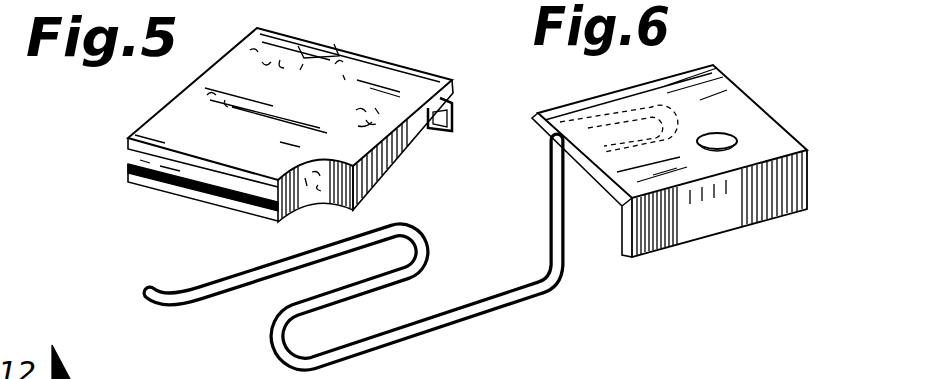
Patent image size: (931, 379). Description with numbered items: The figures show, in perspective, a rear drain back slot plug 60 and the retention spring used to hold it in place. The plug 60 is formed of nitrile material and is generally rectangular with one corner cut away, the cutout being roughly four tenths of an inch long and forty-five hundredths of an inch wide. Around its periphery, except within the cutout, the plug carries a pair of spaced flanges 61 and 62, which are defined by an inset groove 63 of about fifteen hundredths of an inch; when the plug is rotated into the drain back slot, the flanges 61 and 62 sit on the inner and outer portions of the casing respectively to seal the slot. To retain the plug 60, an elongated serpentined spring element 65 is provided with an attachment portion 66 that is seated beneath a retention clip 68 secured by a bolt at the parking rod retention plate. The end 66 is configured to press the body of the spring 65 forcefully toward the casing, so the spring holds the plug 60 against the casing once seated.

In FIG. 5, the rear drain back slot plug 60 is at (147, 195).
In FIG. 5, the flange 61 is at (128, 142).
In FIG. 5, the flange 62 is at (128, 176).
In FIG. 5, the inset groove 63 is at (228, 190).
In FIG. 5, the serpentined spring element 65 is at (275, 352).
In FIG. 6, the attachment portion 66 is at (536, 128).
In FIG. 6, the retention clip 68 is at (748, 97).